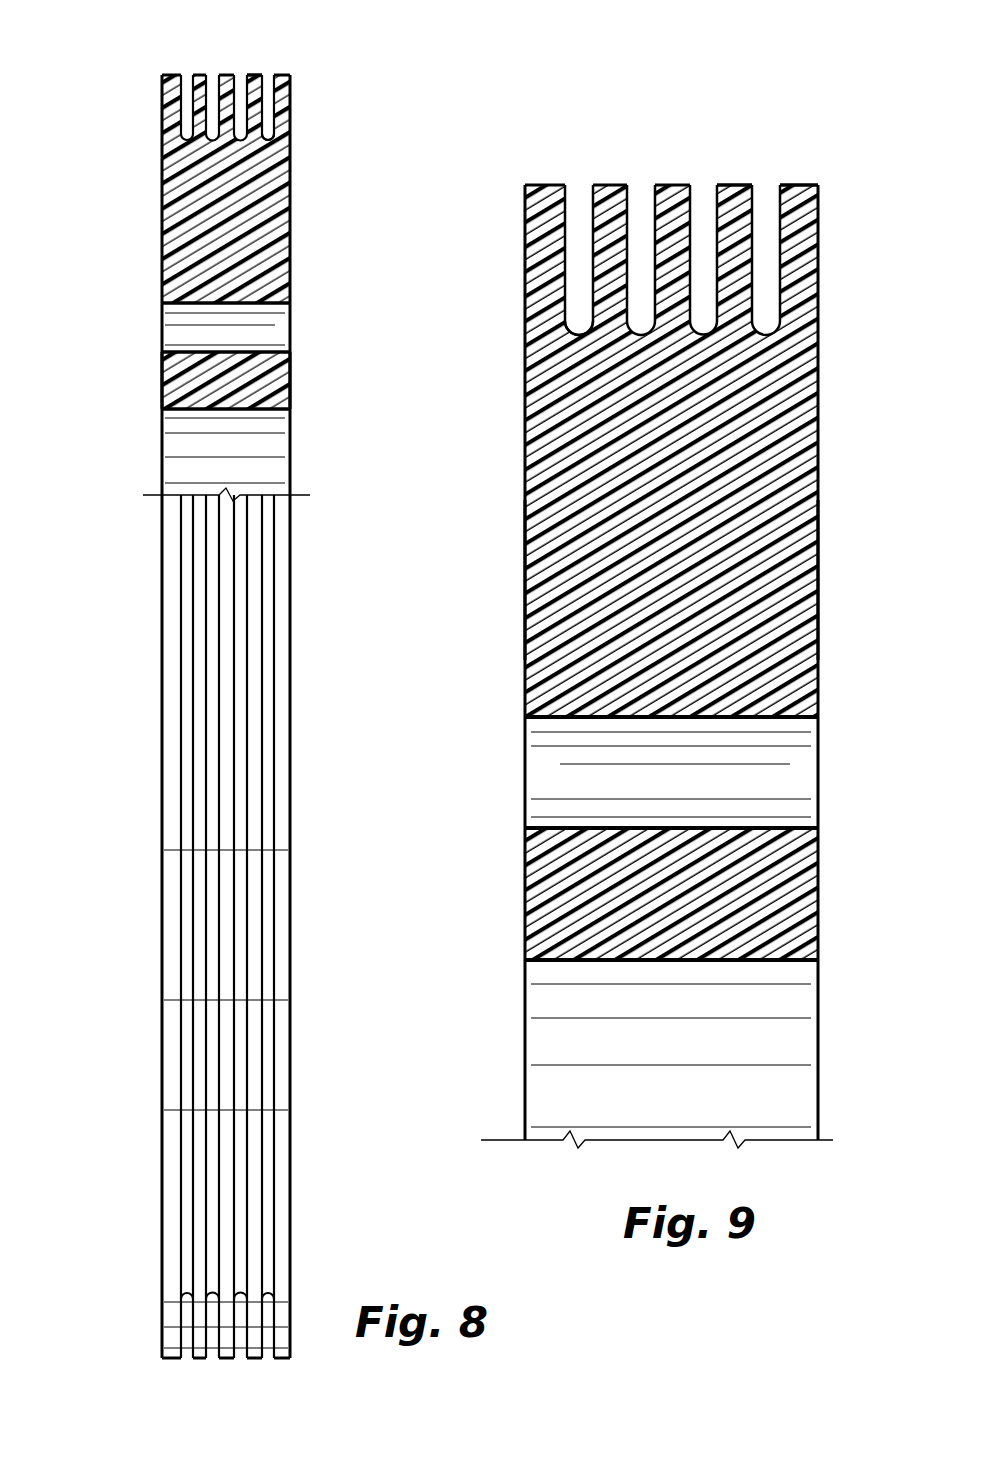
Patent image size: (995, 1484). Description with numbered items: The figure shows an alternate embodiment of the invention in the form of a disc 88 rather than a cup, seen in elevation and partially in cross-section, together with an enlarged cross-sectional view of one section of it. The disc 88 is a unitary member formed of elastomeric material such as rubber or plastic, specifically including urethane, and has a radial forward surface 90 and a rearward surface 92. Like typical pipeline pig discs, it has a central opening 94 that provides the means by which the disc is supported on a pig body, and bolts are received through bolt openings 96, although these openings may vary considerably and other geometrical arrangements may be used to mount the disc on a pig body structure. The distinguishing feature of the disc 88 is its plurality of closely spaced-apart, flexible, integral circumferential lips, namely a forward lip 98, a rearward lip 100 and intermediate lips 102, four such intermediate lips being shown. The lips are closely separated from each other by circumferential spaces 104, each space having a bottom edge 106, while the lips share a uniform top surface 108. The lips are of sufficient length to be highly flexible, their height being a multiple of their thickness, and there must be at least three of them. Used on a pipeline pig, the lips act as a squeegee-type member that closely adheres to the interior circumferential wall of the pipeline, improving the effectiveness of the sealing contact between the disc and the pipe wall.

In FIG. 8, the disc 88 is at (137, 228).
In FIG. 9, the disc 88 is at (524, 170).
In FIG. 8, the radial forward surface 90 is at (162, 381).
In FIG. 9, the radial forward surface 90 is at (525, 583).
In FIG. 8, the rearward surface 92 is at (290, 381).
In FIG. 9, the rearward surface 92 is at (818, 581).
In FIG. 8, the central opening 94 is at (212, 413).
In FIG. 9, the central opening 94 is at (703, 960).
In FIG. 8, the bolt opening 96 is at (197, 303).
In FIG. 9, the bolt opening 96 is at (698, 720).
In FIG. 8, the forward lip 98 is at (167, 88).
In FIG. 9, the forward lip 98 is at (545, 204).
In FIG. 8, the rearward lip 100 is at (285, 88).
In FIG. 9, the rearward lip 100 is at (797, 222).
In FIG. 8, the intermediate lip 102 is at (220, 74).
In FIG. 9, the intermediate lip 102 is at (607, 193).
In FIG. 8, the spaces 104 is at (227, 106).
In FIG. 9, the spaces 104 is at (578, 210).
In FIG. 8, the bottom edge 106 is at (270, 137).
In FIG. 9, the bottom edge 106 is at (580, 337).
In FIG. 8, the top surface 108 is at (250, 73).
In FIG. 9, the top surface 108 is at (742, 187).